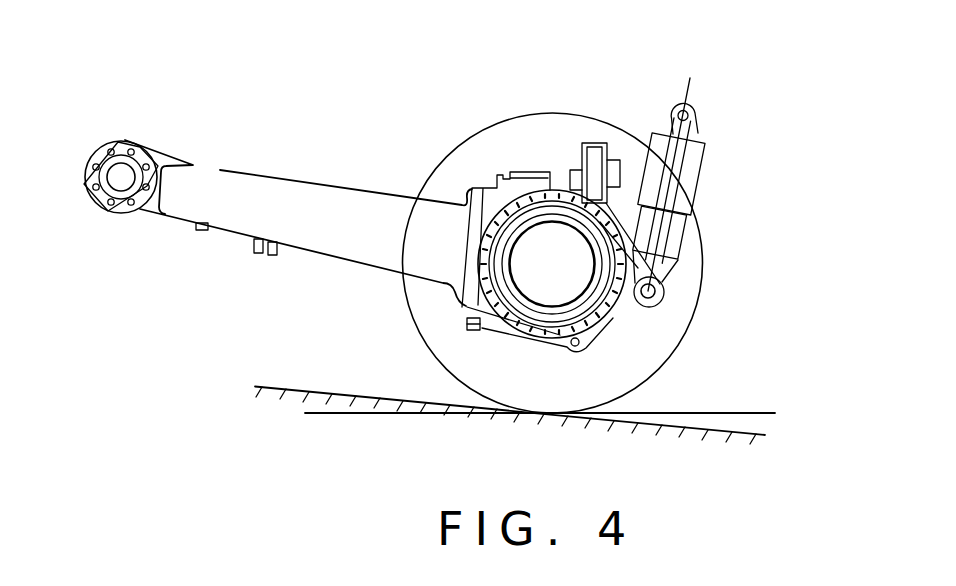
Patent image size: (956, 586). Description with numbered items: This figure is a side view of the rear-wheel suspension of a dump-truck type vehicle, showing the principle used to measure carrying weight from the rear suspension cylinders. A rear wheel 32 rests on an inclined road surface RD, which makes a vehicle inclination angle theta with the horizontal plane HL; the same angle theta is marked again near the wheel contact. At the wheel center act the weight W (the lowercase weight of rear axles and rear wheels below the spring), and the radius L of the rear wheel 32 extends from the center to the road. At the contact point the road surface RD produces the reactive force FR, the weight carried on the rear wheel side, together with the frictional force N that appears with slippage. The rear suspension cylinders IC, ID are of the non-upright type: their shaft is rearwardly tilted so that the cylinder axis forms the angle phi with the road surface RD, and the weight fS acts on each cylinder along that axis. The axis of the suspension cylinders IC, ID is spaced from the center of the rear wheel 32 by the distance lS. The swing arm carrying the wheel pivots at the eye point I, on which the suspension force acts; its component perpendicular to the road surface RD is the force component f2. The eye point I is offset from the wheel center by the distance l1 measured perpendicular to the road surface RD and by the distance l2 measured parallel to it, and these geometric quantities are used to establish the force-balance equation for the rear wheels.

The rear wheels 32 is at (497, 124).
The weight W is at (551, 267).
The eye point I is at (131, 165).
The force component perpendicular to the road surface f2 is at (133, 27).
The distance parallel to the road surface l2 is at (564, 88).
The distance perpendicular to the road surface l1 is at (121, 179).
The axis-to-wheel-center distance lS is at (687, 93).
The suspension cylinder IC is at (709, 192).
The suspension cylinder ID is at (698, 142).
The cylinder axis angle phi is at (647, 292).
The weight acting on suspension cylinder fS is at (648, 291).
The radius of the rear wheel L is at (551, 267).
The frictional force N is at (542, 357).
The reactive force on rear wheel FR is at (545, 414).
The vehicle inclination angle theta is at (322, 414).
The road surface RD is at (379, 397).
The horizontal plane HL is at (690, 412).